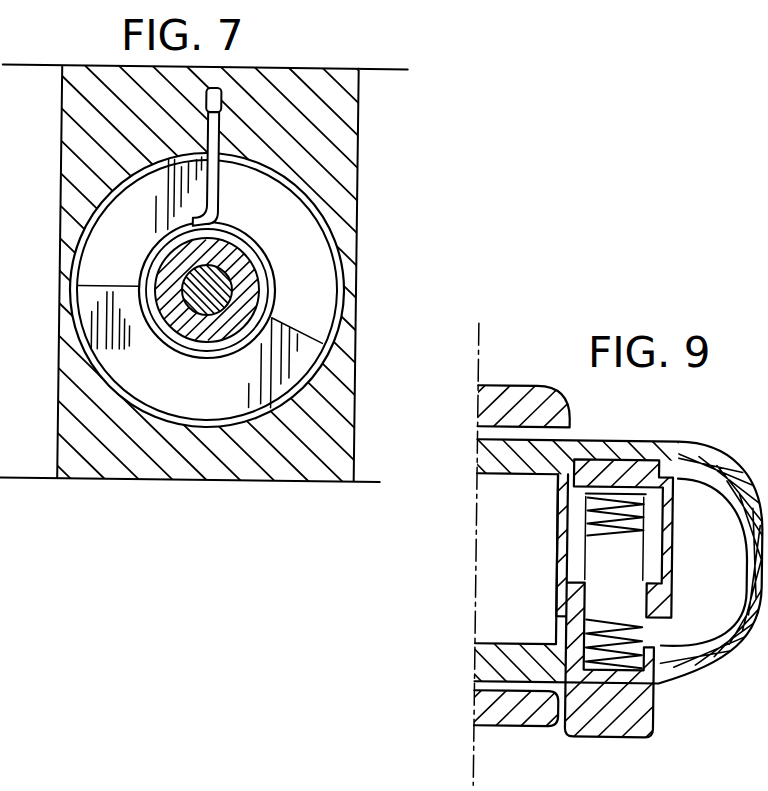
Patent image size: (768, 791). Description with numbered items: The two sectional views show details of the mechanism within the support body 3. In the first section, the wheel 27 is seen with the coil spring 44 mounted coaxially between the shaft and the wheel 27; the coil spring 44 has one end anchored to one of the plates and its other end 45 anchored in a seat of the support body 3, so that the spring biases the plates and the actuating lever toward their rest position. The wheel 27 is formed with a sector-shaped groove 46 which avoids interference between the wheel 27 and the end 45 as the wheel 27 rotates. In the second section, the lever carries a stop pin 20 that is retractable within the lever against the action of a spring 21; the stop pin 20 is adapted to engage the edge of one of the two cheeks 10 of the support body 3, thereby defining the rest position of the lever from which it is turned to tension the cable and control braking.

In FIG. 7, the support body 3 is at (347, 110).
In FIG. 7, the end of coil spring 45 is at (214, 125).
In FIG. 7, the coil spring 44 is at (243, 249).
In FIG. 7, the sector-shaped groove 46 is at (320, 300).
In FIG. 7, the wheel 27 is at (227, 392).
In FIG. 9, the cheeks 10 is at (548, 417).
In FIG. 9, the spring 21 is at (658, 510).
In FIG. 9, the stop pin 20 is at (664, 712).